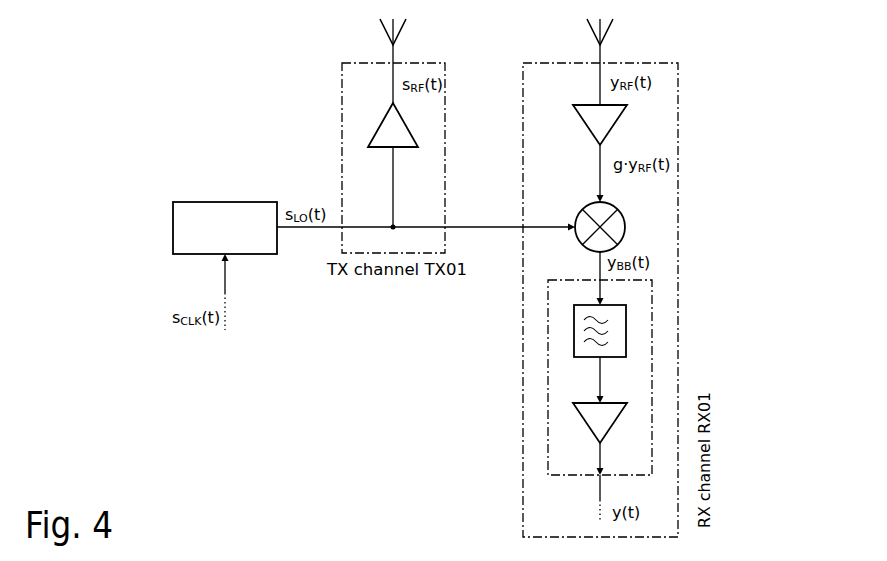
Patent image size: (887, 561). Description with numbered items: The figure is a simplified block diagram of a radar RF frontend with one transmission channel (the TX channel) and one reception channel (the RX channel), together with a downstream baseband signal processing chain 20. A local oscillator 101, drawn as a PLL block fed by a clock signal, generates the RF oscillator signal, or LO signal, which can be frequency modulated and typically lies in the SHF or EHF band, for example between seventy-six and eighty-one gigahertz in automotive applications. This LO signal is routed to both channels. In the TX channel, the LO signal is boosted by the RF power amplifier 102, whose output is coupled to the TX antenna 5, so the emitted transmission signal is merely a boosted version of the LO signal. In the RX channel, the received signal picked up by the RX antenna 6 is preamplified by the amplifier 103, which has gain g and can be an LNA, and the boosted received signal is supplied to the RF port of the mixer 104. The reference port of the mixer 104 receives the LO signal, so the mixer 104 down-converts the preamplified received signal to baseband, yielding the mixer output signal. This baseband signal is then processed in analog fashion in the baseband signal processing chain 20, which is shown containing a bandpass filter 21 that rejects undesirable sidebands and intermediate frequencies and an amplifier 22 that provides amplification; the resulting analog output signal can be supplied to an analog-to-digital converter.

The TX antenna 5 is at (378, 38).
The RX antenna 6 is at (610, 34).
The RF power amplifier 102 is at (376, 128).
The amplifier 103 is at (620, 118).
The local oscillator 101 is at (218, 202).
The mixer 104 is at (627, 220).
The bandpass filter 21 is at (574, 334).
The amplifier 22 is at (582, 426).
The baseband signal processing chain 20 is at (548, 462).